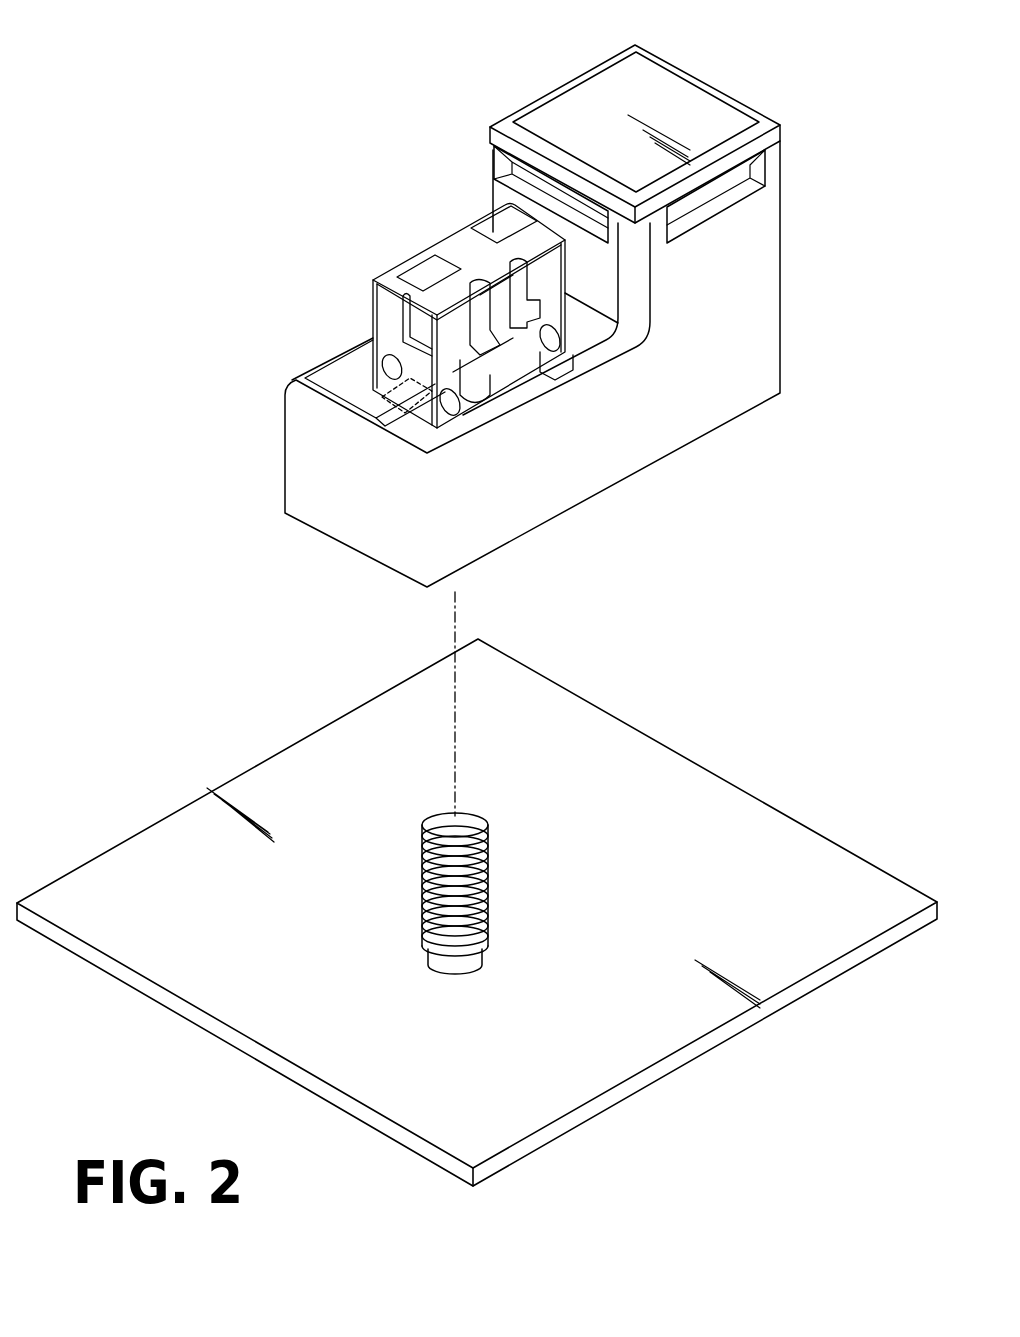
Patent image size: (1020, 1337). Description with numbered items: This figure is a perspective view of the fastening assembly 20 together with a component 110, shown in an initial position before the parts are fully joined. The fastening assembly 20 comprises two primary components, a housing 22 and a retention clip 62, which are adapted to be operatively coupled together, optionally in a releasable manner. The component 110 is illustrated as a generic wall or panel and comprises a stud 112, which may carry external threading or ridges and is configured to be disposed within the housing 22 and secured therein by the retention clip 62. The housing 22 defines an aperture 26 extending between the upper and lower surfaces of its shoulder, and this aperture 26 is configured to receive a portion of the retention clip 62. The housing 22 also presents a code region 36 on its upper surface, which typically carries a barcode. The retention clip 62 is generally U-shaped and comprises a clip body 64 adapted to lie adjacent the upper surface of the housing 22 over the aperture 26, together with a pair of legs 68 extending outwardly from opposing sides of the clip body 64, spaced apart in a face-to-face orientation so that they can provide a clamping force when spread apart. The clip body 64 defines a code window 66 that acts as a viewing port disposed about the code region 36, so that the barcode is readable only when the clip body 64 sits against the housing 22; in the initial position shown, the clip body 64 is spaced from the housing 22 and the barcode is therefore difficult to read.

The fastening assembly 20 is at (832, 70).
The housing 22 is at (790, 306).
The aperture 26 is at (382, 395).
The code region 36 is at (395, 395).
The retention clip 62 is at (365, 300).
The clip body 64 is at (452, 250).
The code window 66 is at (423, 270).
The legs 68 is at (385, 351).
The component 110 is at (800, 858).
The stud 112 is at (440, 820).